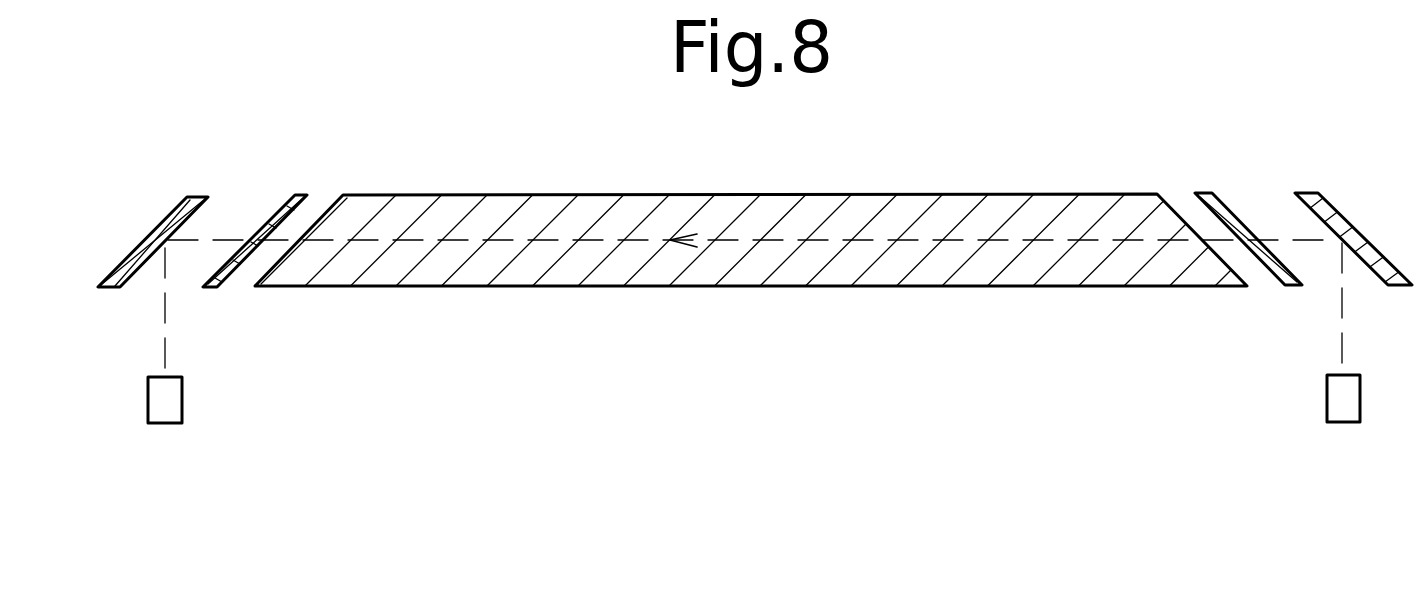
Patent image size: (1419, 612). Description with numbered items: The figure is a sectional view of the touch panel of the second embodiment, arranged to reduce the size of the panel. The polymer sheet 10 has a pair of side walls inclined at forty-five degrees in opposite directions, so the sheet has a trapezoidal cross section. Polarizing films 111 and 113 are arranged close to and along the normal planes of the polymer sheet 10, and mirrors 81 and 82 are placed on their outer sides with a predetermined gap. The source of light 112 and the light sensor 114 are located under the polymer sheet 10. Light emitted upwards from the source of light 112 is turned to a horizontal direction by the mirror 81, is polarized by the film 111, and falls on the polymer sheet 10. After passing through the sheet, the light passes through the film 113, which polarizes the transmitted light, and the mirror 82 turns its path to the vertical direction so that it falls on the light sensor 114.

The polymer sheet 10 is at (805, 195).
The mirror 81 is at (1313, 192).
The mirror 82 is at (168, 218).
The polarizing film 111 is at (1203, 193).
The polarizing film 113 is at (305, 194).
The source of light 112 is at (1340, 423).
The light sensor 114 is at (163, 423).